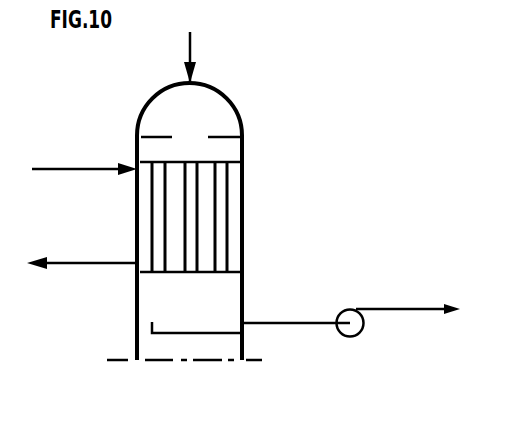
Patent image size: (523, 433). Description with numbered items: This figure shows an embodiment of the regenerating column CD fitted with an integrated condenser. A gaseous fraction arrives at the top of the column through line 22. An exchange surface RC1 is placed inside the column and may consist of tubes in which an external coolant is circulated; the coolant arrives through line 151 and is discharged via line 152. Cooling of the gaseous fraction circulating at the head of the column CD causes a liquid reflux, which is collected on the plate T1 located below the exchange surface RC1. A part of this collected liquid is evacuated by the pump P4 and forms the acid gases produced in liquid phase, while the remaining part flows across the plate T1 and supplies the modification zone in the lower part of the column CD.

The line 22 is at (191, 54).
The line 151 is at (44, 168).
The line 152 is at (90, 265).
The exchange surface RC1 is at (223, 203).
The column CD is at (252, 288).
The plate T1 is at (172, 333).
The pump P4 is at (351, 308).